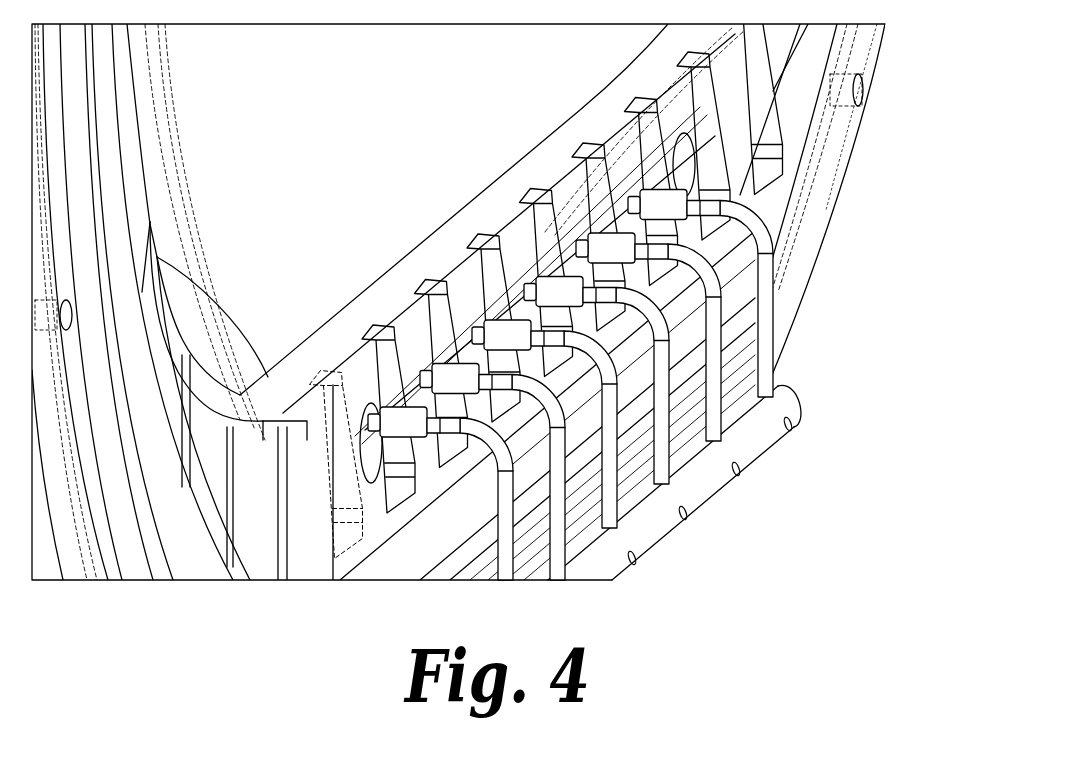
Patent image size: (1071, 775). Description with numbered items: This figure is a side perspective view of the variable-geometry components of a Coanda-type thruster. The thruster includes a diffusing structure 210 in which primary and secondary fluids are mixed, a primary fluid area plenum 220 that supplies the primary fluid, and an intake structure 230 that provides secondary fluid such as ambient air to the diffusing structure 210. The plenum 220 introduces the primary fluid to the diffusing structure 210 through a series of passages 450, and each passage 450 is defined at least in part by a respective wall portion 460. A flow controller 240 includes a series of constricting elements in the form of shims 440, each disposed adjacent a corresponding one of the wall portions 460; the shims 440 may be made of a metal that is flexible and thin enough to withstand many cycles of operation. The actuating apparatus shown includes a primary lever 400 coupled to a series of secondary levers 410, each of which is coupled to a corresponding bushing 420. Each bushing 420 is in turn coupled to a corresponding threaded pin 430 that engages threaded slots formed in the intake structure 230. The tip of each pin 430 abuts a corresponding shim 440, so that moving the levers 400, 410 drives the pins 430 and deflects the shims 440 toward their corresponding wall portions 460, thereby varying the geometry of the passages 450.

The diffusing structure 210 is at (273, 79).
The primary fluid area plenum 220 is at (378, 221).
The intake structure 230 is at (884, 134).
The flow controller 240 is at (860, 367).
The primary lever 400 is at (800, 432).
The secondary lever 410 is at (763, 324).
The bushing 420 is at (622, 150).
The threaded pin 430 is at (583, 220).
The shim 440 is at (410, 327).
The passage 450 is at (500, 218).
The wall portion 460 is at (460, 269).